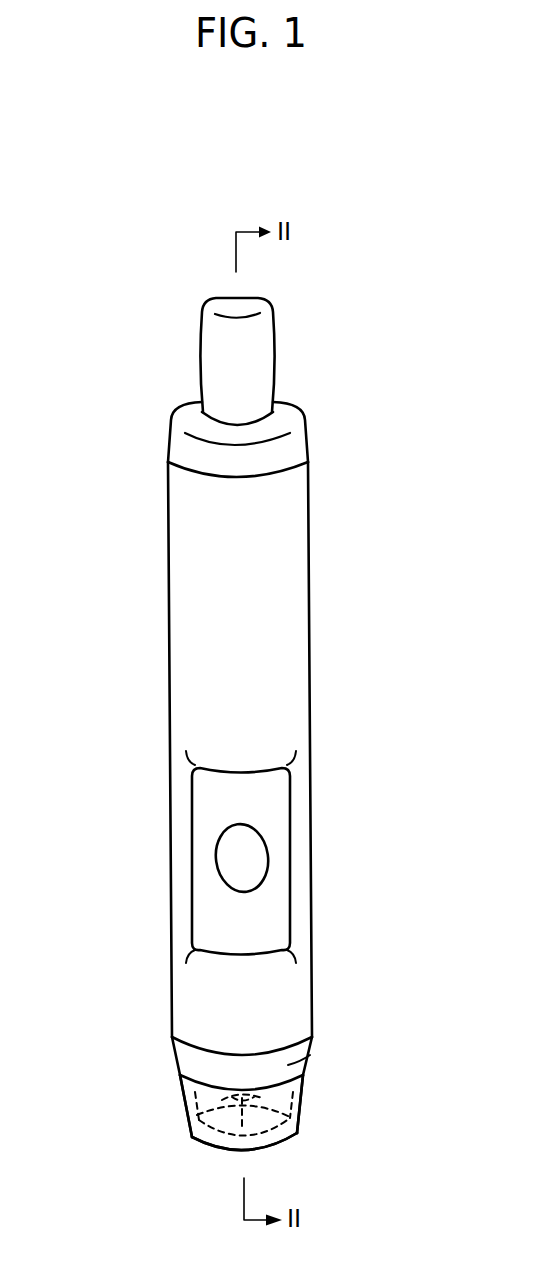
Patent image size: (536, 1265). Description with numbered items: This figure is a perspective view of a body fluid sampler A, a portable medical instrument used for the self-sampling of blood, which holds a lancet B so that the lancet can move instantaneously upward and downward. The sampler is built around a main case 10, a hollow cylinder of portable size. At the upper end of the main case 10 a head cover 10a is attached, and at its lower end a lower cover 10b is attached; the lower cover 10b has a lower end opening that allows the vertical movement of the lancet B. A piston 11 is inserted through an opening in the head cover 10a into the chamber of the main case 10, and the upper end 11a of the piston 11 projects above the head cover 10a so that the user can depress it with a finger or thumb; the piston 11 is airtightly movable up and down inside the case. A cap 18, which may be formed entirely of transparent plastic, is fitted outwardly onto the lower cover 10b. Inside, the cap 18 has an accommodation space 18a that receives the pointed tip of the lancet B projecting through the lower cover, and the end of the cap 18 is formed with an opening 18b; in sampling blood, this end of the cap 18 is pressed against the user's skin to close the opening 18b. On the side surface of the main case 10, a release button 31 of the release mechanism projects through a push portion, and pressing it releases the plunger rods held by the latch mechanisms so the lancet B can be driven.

The body fluid sampler A is at (342, 375).
The lancet B is at (303, 1095).
The main case 10 is at (268, 670).
The head cover 10a is at (277, 453).
The lower cover 10b is at (305, 1050).
The piston 11 is at (170, 346).
The upper end of piston 11a is at (228, 307).
The cap 18 is at (187, 1119).
The accommodation space 18a is at (193, 1097).
The opening 18b is at (283, 1142).
The release button 31 is at (240, 861).